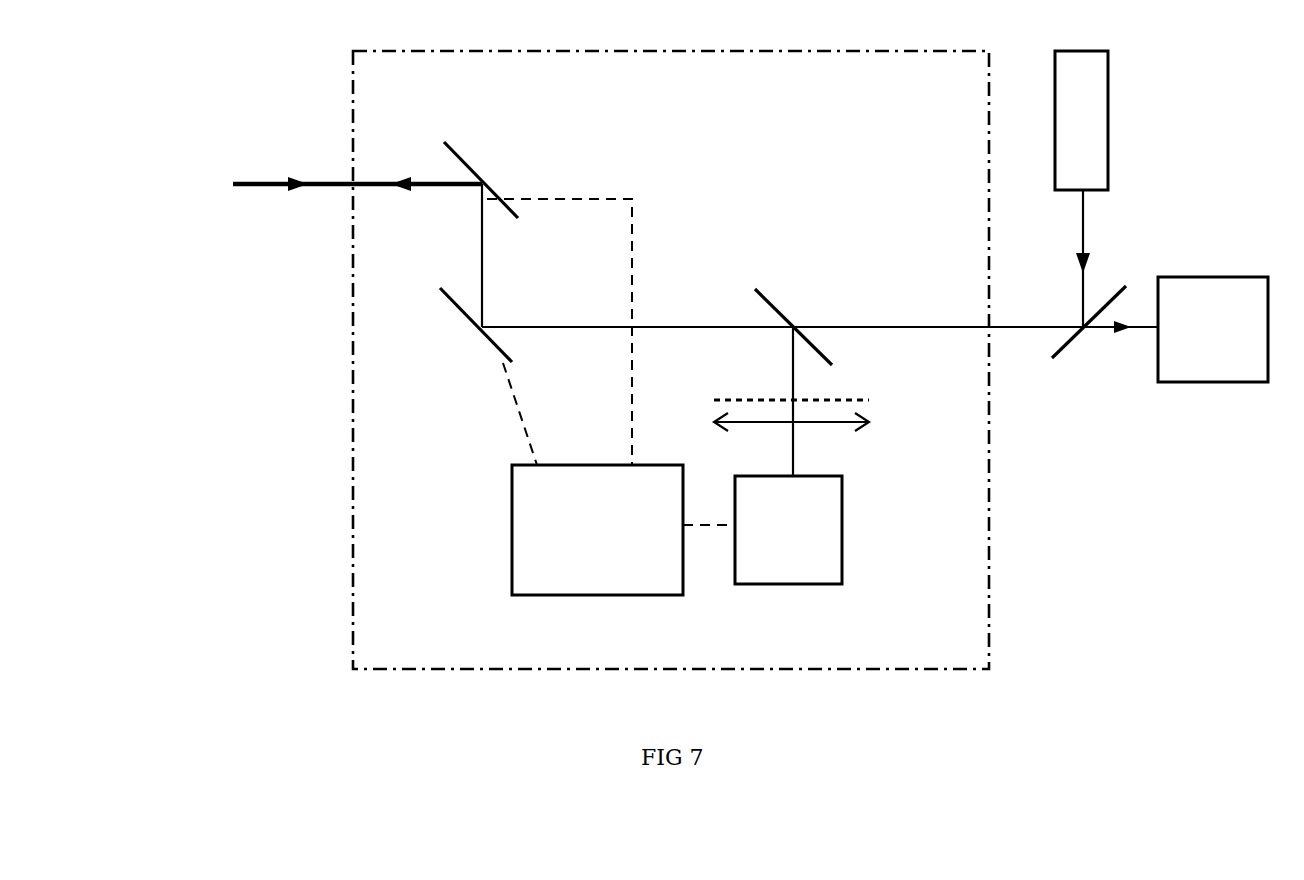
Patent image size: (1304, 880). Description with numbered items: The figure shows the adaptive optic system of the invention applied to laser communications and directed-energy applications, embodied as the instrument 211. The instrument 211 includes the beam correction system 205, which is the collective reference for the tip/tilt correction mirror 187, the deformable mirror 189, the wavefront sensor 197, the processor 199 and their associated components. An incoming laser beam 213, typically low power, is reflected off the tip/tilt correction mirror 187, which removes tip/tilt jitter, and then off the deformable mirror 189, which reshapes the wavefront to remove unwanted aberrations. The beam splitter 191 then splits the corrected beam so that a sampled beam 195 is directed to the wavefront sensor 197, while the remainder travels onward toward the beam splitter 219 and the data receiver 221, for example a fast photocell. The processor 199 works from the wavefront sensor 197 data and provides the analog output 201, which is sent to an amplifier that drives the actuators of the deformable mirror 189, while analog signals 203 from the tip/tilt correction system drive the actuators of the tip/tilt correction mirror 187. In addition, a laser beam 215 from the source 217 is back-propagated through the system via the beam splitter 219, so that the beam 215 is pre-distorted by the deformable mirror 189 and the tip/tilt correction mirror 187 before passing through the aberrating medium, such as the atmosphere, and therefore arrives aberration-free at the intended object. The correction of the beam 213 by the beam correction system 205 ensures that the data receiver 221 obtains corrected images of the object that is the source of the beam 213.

The tip/tilt correction mirror 187 is at (466, 150).
The deformable mirror 189 is at (478, 333).
The beam splitter 191 is at (768, 297).
The beam 195 is at (790, 362).
The wavefront sensor 197 is at (878, 390).
The processor 199 is at (525, 560).
The analog output 201 is at (520, 405).
The analog signals 203 is at (630, 196).
The beam correction system 205 is at (353, 398).
The instrument 211 is at (243, 547).
The beam 213 is at (268, 190).
The laser beam 215 is at (408, 192).
The source 217 is at (1094, 119).
The beam splitter 219 is at (1067, 350).
The data receiver 221 is at (1195, 373).